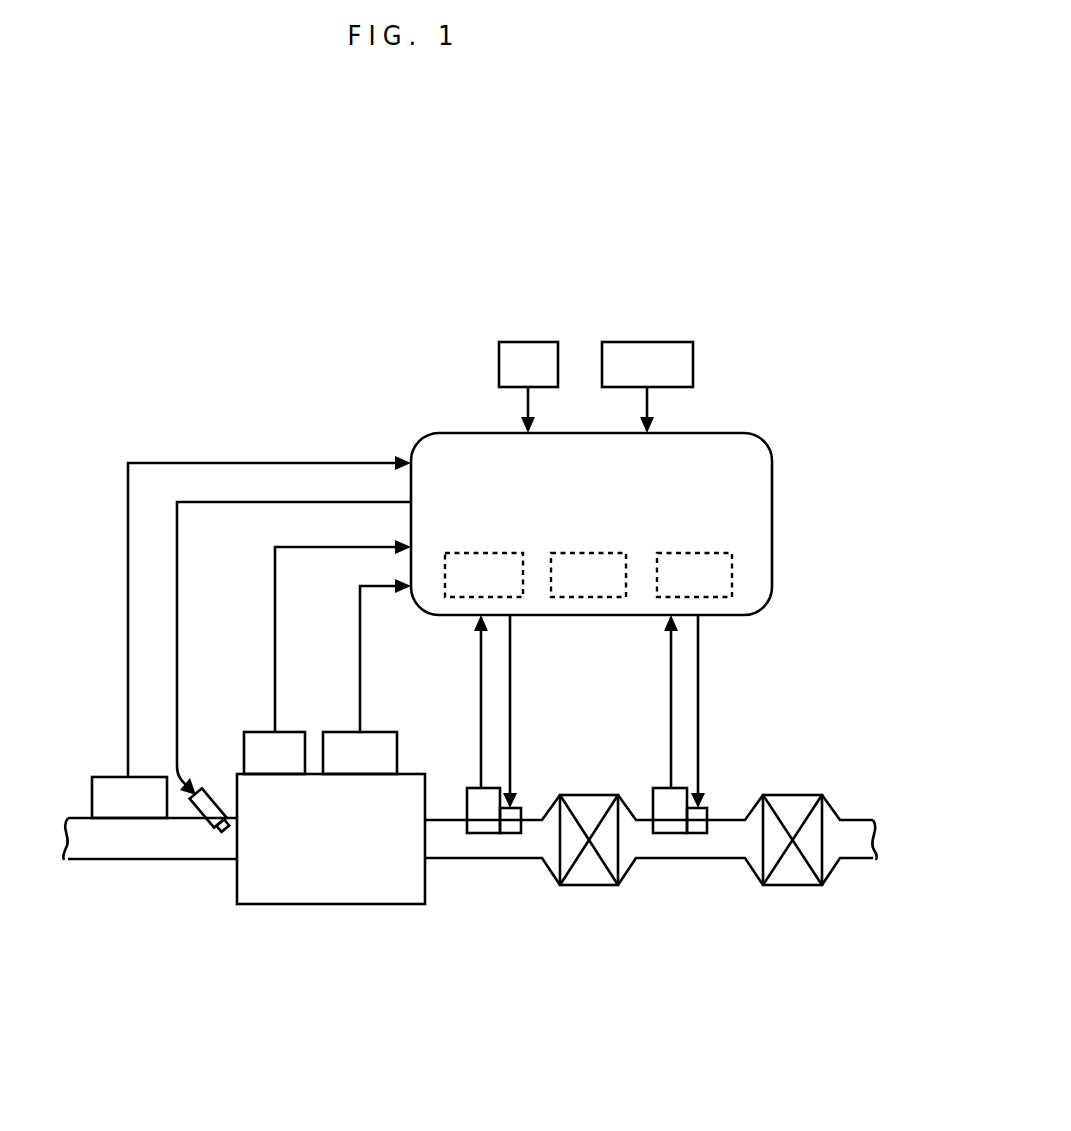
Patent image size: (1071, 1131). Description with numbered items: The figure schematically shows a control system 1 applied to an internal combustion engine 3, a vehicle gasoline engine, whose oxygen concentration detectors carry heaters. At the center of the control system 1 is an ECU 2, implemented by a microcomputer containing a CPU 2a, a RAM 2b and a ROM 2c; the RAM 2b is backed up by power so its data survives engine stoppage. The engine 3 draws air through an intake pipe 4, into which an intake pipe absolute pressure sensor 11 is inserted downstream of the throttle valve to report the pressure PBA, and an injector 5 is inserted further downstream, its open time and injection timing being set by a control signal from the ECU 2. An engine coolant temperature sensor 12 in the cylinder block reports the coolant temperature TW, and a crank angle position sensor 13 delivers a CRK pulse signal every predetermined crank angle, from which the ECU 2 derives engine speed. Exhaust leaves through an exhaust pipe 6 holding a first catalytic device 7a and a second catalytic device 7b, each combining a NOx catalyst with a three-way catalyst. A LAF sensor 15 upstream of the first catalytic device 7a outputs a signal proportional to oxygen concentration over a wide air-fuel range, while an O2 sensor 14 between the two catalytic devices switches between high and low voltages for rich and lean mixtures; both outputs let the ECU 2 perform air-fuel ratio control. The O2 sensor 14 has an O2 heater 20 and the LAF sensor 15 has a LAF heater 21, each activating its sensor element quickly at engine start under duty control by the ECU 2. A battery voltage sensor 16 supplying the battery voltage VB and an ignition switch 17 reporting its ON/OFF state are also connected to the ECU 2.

The control system 1 is at (773, 256).
The ECU 2 is at (737, 432).
The CPU 2a is at (458, 553).
The RAM 2b is at (586, 597).
The ROM 2c is at (722, 553).
The internal combustion engine 3 is at (324, 904).
The intake pipe 4 is at (165, 860).
The injector 5 is at (204, 789).
The exhaust pipe 6 is at (490, 859).
The first catalytic device 7a is at (588, 886).
The second catalytic device 7b is at (792, 886).
The intake pipe absolute pressure sensor 11 is at (112, 777).
The engine coolant temperature sensor 12 is at (284, 732).
The crank angle position sensor 13 is at (380, 732).
The O2 sensor 14 is at (653, 790).
The LAF sensor 15 is at (467, 790).
The battery voltage sensor 16 is at (542, 342).
The ignition switch 17 is at (664, 342).
The O2 heater 20 is at (714, 724).
The LAF heater 21 is at (517, 808).